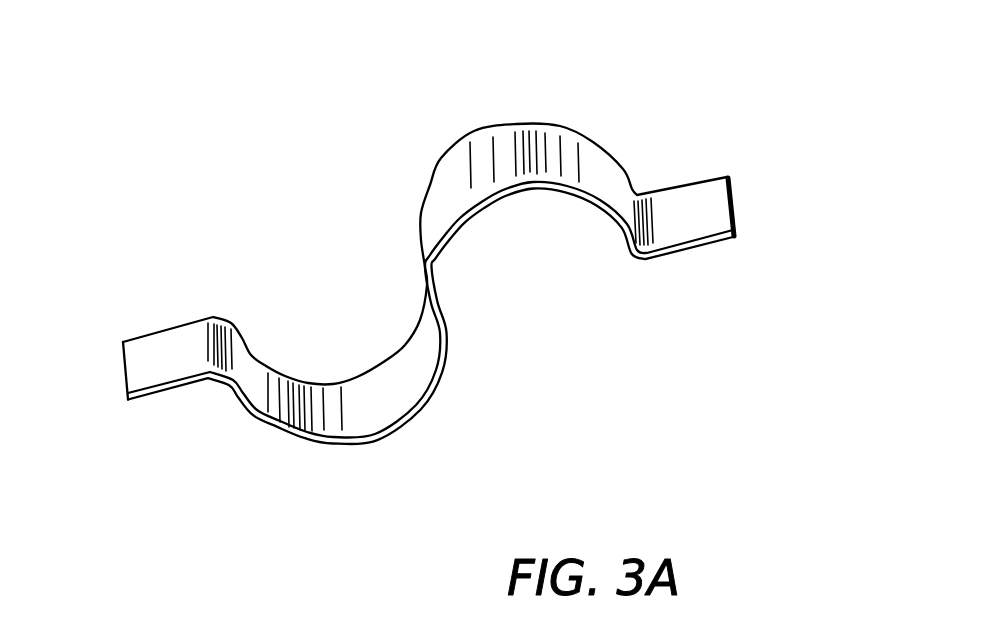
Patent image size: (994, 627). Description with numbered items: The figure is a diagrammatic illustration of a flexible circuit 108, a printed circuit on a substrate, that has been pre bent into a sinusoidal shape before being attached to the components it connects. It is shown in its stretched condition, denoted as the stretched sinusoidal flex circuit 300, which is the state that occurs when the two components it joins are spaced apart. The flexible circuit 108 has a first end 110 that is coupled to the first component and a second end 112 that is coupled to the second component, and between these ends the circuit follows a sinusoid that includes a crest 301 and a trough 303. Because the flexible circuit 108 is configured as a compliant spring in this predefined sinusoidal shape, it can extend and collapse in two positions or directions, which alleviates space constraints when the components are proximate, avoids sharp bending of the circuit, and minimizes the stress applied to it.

The stretched sinusoidal flex circuit 300 is at (556, 90).
The flexible circuit 108 is at (432, 190).
The first end 110 is at (130, 370).
The second end 112 is at (723, 200).
The crest 301 is at (532, 190).
The trough 303 is at (365, 373).